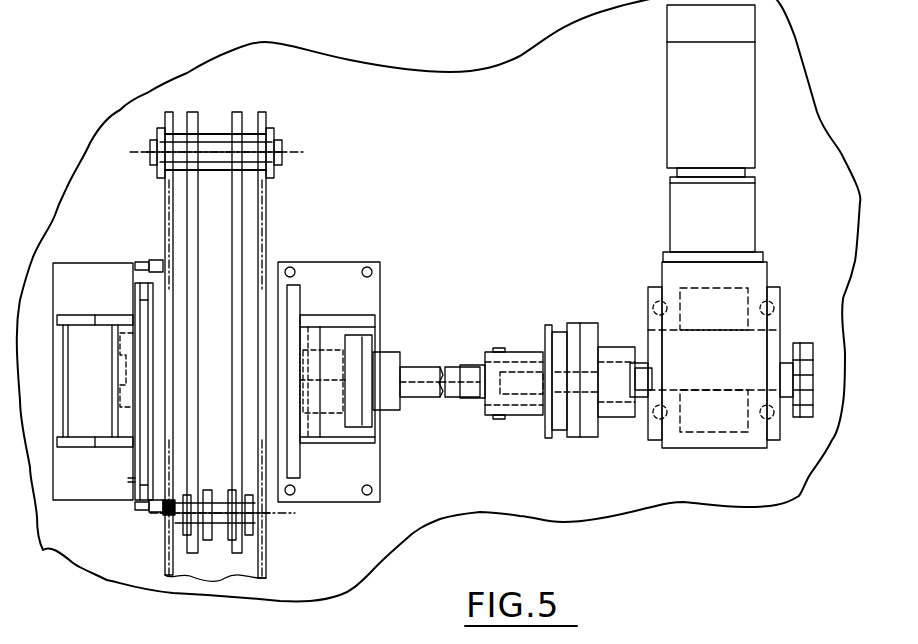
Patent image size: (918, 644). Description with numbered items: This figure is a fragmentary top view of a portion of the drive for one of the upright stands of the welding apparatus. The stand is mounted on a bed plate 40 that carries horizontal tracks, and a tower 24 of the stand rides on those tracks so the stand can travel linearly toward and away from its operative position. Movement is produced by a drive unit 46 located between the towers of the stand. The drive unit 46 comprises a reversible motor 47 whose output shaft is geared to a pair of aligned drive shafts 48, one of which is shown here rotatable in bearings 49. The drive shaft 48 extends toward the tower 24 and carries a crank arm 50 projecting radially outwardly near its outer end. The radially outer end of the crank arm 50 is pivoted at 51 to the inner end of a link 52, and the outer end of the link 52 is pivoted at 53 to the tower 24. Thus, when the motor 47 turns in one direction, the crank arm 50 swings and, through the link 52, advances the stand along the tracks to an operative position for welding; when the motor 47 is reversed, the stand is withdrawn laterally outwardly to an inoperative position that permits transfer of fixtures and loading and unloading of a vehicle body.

The bed plate 40 is at (418, 82).
The tower 24 is at (163, 233).
The drive unit 46 is at (603, 236).
The reversible motor 47 is at (678, 98).
The drive shaft 48 is at (447, 368).
The bearing 49 is at (297, 323).
The crank arm 50 is at (165, 508).
The pivot 51 is at (277, 517).
The link 52 is at (240, 233).
The pivot 53 is at (280, 150).